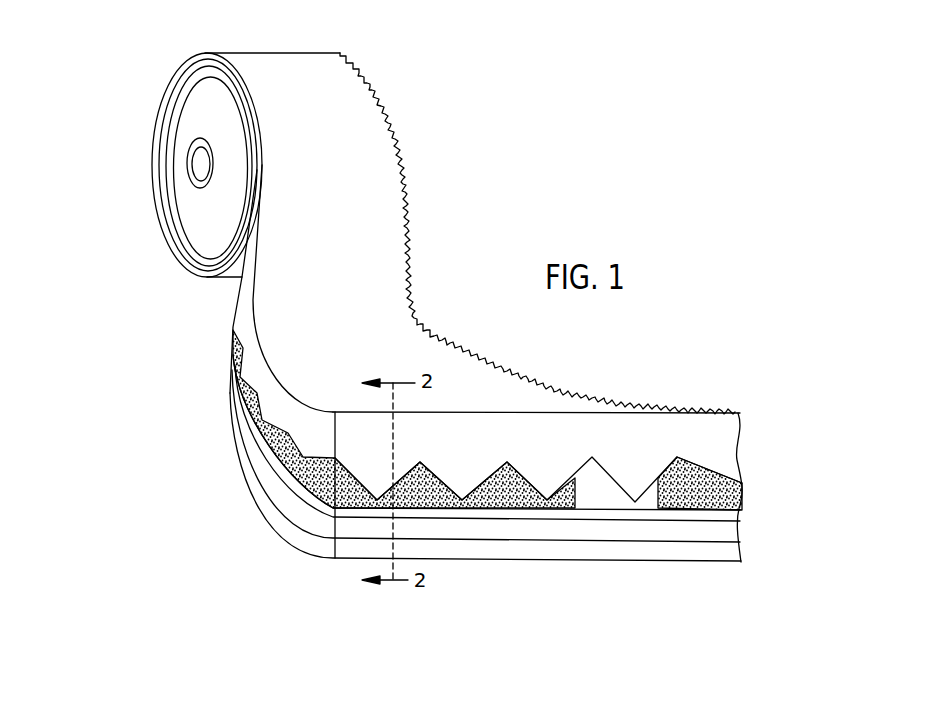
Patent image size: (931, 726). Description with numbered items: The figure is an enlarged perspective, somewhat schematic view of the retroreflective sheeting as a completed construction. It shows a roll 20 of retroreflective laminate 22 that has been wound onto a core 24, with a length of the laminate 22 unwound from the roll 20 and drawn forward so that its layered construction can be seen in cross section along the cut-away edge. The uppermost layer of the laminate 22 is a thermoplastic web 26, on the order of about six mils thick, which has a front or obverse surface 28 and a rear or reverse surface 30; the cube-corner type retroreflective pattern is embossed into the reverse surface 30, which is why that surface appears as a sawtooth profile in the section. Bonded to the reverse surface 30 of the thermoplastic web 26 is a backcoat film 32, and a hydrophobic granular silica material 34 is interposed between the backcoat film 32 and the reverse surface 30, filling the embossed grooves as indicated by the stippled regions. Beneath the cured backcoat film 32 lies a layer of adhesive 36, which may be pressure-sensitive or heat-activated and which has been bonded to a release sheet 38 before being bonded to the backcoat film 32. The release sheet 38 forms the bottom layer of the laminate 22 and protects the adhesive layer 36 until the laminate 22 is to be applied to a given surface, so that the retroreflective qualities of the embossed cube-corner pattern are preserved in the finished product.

The roll of retroreflective laminate 20 is at (157, 110).
The retroreflective laminate 22 is at (285, 53).
The core 24 is at (203, 161).
The thermoplastic web 26 is at (741, 417).
The front or obverse surface 28 is at (557, 413).
The rear or reverse surface 30 is at (738, 486).
The backcoat film 32 is at (543, 515).
The hydrophobic granular silica material 34 is at (430, 495).
The adhesive layer 36 is at (647, 530).
The release sheet 38 is at (733, 550).